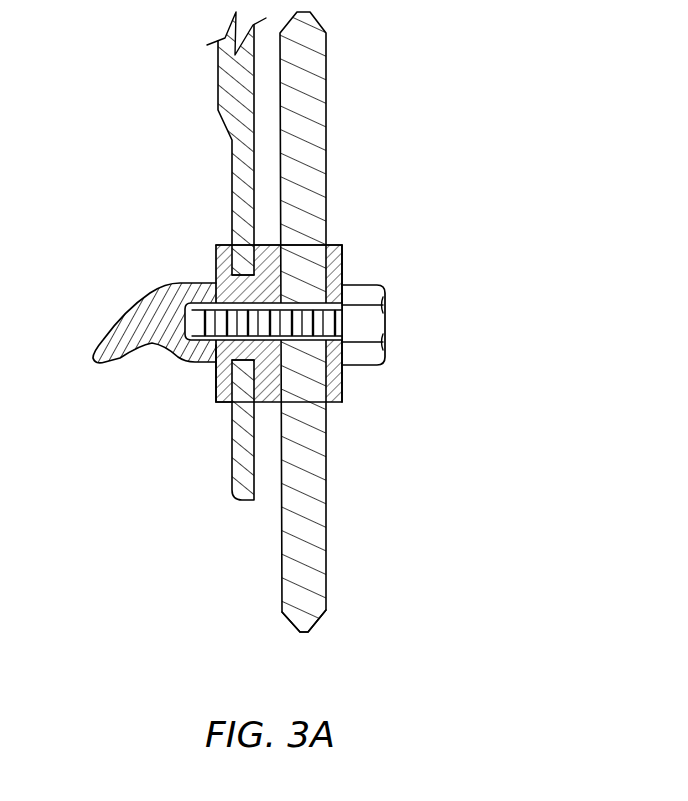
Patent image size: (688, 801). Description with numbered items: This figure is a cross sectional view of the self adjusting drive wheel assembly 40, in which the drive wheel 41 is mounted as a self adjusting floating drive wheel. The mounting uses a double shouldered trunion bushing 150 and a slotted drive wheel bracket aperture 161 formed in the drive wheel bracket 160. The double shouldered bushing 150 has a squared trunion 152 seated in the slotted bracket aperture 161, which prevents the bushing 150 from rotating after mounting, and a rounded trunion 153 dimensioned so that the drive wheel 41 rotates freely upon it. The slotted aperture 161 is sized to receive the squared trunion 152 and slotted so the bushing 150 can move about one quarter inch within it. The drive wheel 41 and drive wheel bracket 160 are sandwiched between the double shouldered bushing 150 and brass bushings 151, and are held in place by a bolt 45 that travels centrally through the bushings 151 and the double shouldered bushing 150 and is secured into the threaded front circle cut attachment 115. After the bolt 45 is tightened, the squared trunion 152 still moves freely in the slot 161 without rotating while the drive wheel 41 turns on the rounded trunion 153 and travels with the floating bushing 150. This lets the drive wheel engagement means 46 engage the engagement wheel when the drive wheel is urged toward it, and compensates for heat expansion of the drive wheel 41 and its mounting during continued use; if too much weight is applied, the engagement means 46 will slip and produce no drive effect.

The self adjusting drive wheel assembly 40 is at (131, 544).
The drive wheel 41 is at (326, 70).
The bolt 45 is at (385, 325).
The drive wheel engagement means 46 is at (305, 632).
The threaded front circle cut attachment 115 is at (118, 313).
The double shouldered trunion bushing 150 is at (273, 382).
The brass bushings 151 is at (216, 382).
The squared trunion 152 is at (246, 362).
The rounded trunion 153 is at (343, 262).
The drive wheel bracket 160 is at (231, 152).
The slotted drive wheel bracket aperture 161 is at (228, 272).